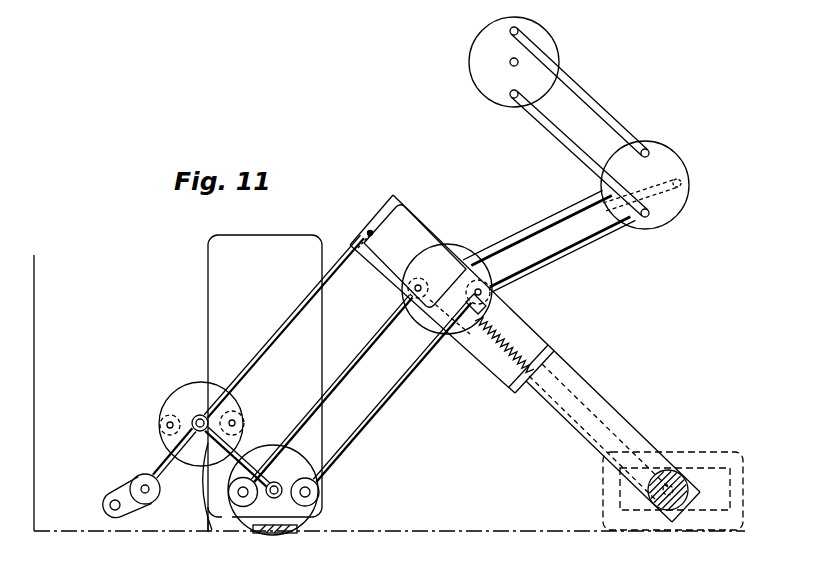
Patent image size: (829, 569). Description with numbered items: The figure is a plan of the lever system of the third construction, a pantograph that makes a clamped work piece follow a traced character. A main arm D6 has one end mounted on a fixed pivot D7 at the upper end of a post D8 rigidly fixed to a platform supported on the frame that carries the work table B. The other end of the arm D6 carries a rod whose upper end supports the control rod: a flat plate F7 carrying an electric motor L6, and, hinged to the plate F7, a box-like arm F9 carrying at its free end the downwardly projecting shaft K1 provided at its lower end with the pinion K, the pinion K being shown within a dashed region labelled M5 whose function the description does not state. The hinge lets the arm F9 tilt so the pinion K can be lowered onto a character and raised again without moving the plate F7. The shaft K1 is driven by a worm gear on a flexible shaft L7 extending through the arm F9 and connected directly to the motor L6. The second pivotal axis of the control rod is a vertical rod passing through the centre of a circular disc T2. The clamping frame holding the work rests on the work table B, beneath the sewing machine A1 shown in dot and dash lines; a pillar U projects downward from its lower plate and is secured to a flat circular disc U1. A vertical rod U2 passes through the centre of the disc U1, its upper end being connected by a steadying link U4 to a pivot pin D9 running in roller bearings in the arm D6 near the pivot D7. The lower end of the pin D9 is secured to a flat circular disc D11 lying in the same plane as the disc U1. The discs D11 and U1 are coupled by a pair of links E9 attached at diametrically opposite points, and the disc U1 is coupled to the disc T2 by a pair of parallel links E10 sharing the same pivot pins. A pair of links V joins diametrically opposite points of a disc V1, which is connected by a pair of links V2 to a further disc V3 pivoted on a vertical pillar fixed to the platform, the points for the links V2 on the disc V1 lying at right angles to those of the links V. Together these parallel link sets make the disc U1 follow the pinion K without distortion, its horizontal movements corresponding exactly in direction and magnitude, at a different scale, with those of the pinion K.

The work table B is at (62, 520).
The sewing machine A1 is at (217, 278).
The disc V3 is at (483, 70).
The links V2 is at (605, 115).
The disc V1 is at (655, 152).
The links V is at (570, 242).
The circular disc T2 is at (463, 253).
The electric motor L6 is at (417, 242).
The flat plate F7 is at (390, 207).
The flexible shaft L7 is at (495, 347).
The box-like arm F9 is at (553, 407).
The pinion K is at (670, 480).
The mounting block M5 is at (710, 470).
The shaft K1 is at (675, 510).
The flat circular disc D11 is at (190, 390).
The pivot pin D9 is at (194, 420).
The main arm D6 is at (310, 318).
The parallel links E10 is at (404, 377).
The links E9 is at (240, 437).
The fixed pivot D7 is at (144, 487).
The post D8 is at (128, 508).
The pillar U is at (276, 531).
The flat circular disc U1 is at (300, 519).
The vertical rod U2 is at (320, 494).
The steadying link U4 is at (208, 532).